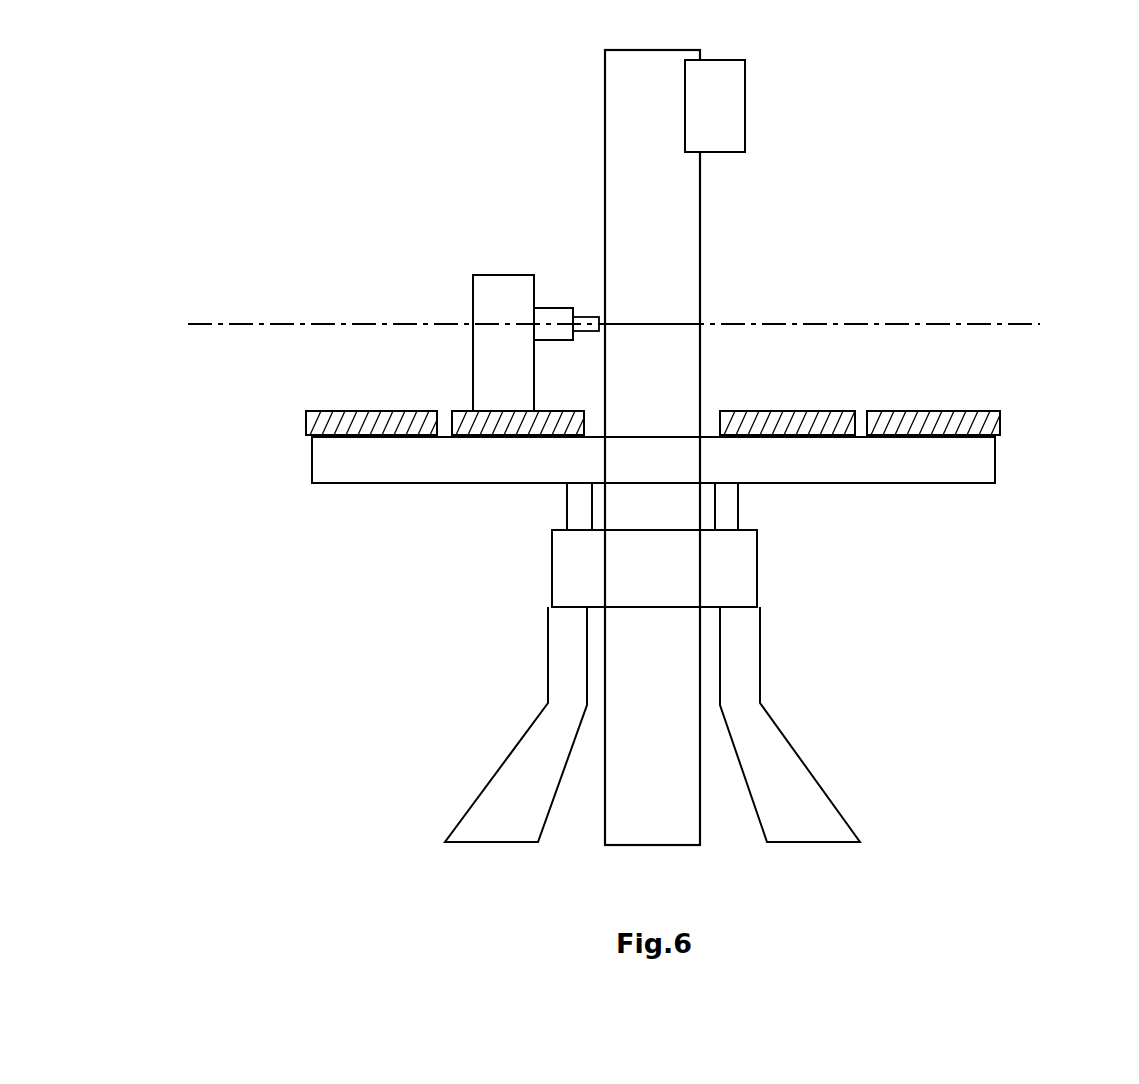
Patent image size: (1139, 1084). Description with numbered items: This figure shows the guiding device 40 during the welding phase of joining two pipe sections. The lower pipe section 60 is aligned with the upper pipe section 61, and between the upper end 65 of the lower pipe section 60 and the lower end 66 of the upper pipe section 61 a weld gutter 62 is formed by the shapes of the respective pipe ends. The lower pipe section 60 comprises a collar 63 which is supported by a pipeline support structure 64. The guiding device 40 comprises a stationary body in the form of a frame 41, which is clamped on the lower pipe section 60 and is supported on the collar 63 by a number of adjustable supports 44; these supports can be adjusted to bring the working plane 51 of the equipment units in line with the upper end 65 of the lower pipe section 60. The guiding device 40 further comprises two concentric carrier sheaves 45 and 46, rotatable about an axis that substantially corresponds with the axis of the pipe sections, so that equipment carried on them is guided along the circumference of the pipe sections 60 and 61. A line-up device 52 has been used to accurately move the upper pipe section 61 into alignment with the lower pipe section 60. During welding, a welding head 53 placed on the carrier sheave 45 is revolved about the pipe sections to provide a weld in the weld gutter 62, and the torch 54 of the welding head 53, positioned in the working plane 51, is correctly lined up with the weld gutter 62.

The guiding device 40 is at (1056, 219).
The frame 41 is at (363, 477).
The adjustable supports 44 is at (560, 494).
The carrier sheave 45 is at (451, 408).
The carrier sheave 46 is at (356, 408).
The working plane 51 is at (256, 321).
The line-up device 52 is at (739, 92).
The welding head 53 is at (476, 291).
The torch 54 is at (568, 310).
The lower pipe section 60 is at (690, 724).
The upper pipe section 61 is at (603, 97).
The weld gutter 62 is at (686, 328).
The collar 63 is at (744, 587).
The pipeline support structure 64 is at (800, 800).
The upper end of the lower pipe section 65 is at (650, 327).
The lower end of the upper pipe section 66 is at (630, 317).